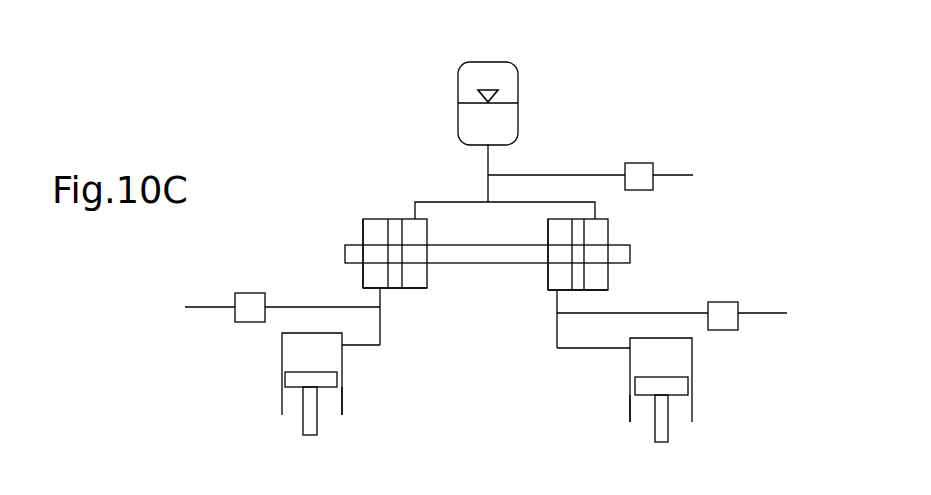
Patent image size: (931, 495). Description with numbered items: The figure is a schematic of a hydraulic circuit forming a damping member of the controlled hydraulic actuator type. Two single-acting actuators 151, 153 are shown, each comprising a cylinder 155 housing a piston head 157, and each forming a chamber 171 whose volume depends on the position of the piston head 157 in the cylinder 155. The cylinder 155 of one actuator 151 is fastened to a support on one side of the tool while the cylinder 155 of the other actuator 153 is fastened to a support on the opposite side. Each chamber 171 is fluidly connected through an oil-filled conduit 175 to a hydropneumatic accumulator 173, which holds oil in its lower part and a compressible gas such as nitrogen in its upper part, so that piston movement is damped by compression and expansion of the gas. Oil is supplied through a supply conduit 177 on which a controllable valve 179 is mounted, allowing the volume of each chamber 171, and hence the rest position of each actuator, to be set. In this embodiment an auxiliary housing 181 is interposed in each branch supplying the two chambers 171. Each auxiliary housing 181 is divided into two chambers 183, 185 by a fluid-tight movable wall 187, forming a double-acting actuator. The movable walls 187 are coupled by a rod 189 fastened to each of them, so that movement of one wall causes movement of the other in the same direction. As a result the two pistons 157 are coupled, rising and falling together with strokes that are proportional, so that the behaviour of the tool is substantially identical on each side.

The single-acting actuator 151 is at (276, 368).
The single-acting actuator 153 is at (706, 375).
The cylinder 155 is at (342, 398).
The piston head 157 is at (318, 423).
The chamber 171 is at (328, 357).
The hydropneumatic accumulator 173 is at (458, 80).
The conduit 175 is at (385, 333).
The supply conduit 177 is at (563, 175).
The controllable valve 179 is at (640, 163).
The auxiliary housing 181 is at (372, 214).
The chamber 183 is at (363, 275).
The chamber 185 is at (417, 275).
The movable wall 187 is at (395, 292).
The rod 189 is at (508, 263).